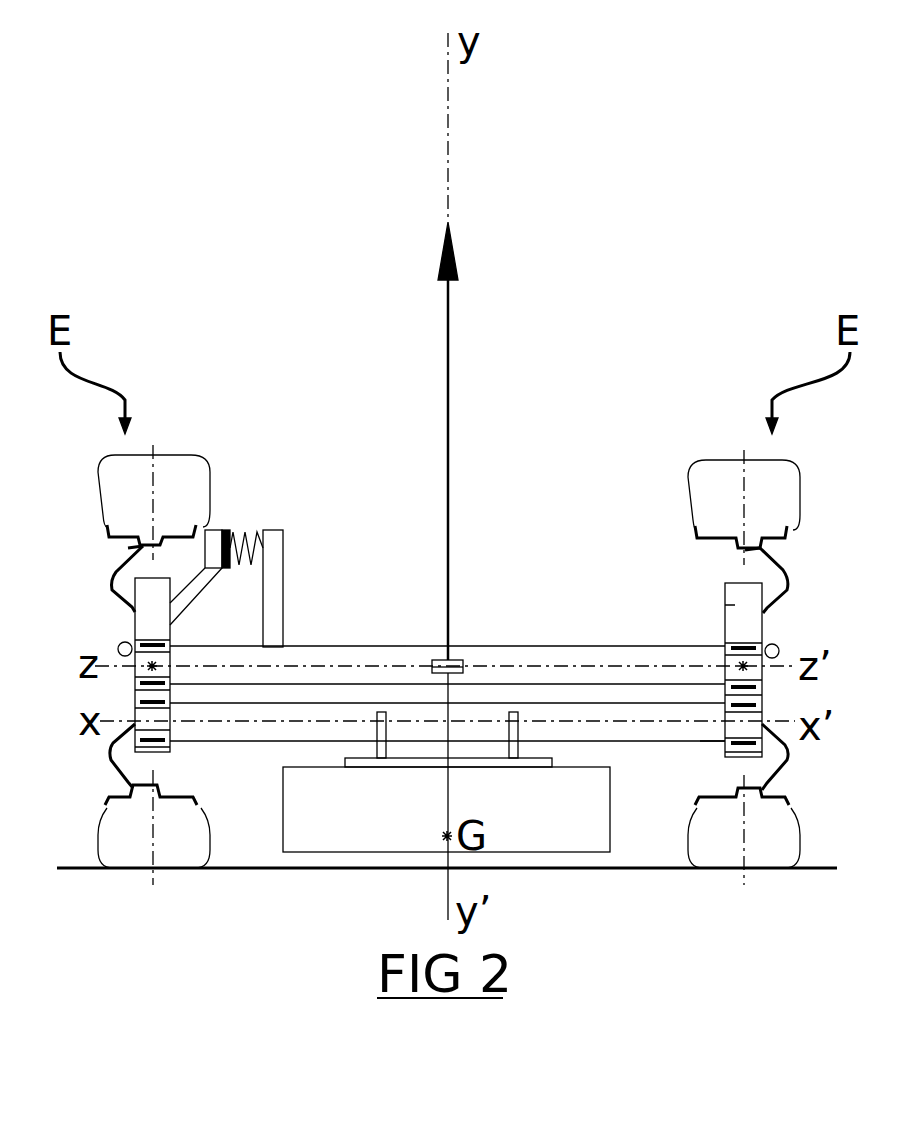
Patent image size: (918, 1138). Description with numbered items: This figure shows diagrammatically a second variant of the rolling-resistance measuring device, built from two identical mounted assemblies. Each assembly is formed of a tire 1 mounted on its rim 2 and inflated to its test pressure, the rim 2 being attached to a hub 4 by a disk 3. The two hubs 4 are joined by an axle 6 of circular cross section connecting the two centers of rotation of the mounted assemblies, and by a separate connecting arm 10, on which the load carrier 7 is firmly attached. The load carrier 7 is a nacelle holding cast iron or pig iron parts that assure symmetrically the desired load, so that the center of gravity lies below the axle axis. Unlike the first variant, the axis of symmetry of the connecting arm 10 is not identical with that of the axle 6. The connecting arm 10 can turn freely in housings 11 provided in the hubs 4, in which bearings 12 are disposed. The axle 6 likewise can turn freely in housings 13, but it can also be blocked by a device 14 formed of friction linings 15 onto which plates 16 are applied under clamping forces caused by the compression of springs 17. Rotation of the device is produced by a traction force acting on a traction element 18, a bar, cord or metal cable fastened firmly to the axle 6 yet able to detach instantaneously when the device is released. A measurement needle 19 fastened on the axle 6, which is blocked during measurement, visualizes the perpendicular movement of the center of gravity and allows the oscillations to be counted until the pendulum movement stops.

The tire 1 is at (160, 474).
The rim 2 is at (100, 530).
The disk 3 is at (105, 575).
The hub 4 is at (135, 632).
The axle 6 is at (322, 640).
The load carrier 7 is at (345, 850).
The connecting arm 10 is at (710, 732).
The housings 11 is at (120, 755).
The bearings 12 is at (783, 760).
The housings 13 is at (695, 612).
The blocking device 14 is at (304, 546).
The friction linings 15 is at (212, 518).
The plates 16 is at (220, 570).
The springs 17 is at (270, 527).
The traction element 18 is at (452, 660).
The measurement needle 19 is at (460, 387).